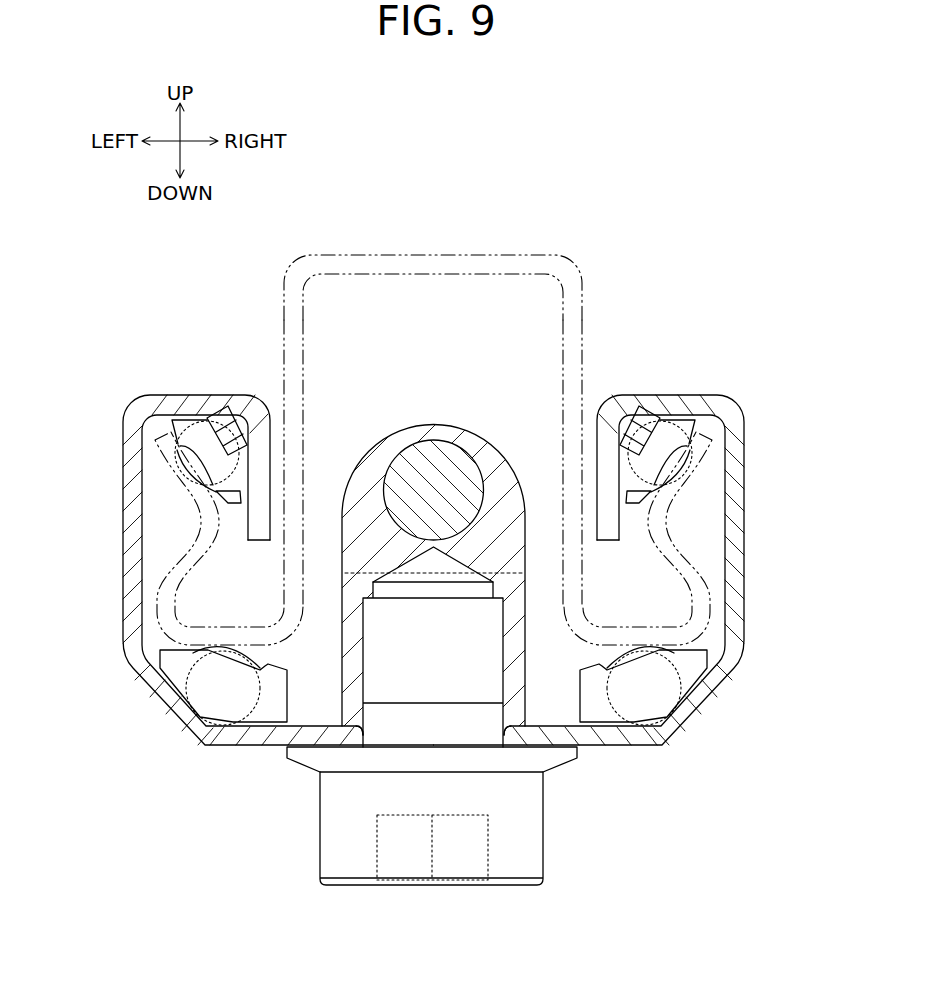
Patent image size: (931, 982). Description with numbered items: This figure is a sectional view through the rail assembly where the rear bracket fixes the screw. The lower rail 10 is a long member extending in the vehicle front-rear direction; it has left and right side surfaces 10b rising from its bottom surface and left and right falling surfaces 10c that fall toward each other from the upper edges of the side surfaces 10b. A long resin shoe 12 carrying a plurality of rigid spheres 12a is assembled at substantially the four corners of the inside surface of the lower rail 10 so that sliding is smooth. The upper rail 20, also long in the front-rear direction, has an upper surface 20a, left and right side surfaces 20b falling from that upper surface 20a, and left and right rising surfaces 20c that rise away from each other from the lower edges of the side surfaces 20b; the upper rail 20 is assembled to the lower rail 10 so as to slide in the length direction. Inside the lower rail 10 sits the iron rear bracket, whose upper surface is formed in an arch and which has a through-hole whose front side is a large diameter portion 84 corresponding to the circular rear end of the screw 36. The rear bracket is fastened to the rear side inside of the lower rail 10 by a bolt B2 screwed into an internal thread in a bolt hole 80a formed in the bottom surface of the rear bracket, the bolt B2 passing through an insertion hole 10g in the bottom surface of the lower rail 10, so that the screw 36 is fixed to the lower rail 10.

The lower rail 10 is at (739, 373).
The side surface of lower rail 10b is at (125, 583).
The falling surface of lower rail 10c is at (262, 482).
The insertion hole 10g is at (358, 738).
The resin shoe 12 is at (183, 420).
The rigid sphere 12a is at (212, 455).
The upper rail 20 is at (434, 399).
The upper surface of upper rail 20a is at (445, 254).
The side surface of upper rail 20b is at (304, 353).
The rising surface of upper rail 20c is at (188, 560).
The screw 36 is at (445, 484).
The large diameter portion 84 is at (432, 432).
The bolt hole 80a is at (503, 663).
The bolt B2 is at (513, 872).